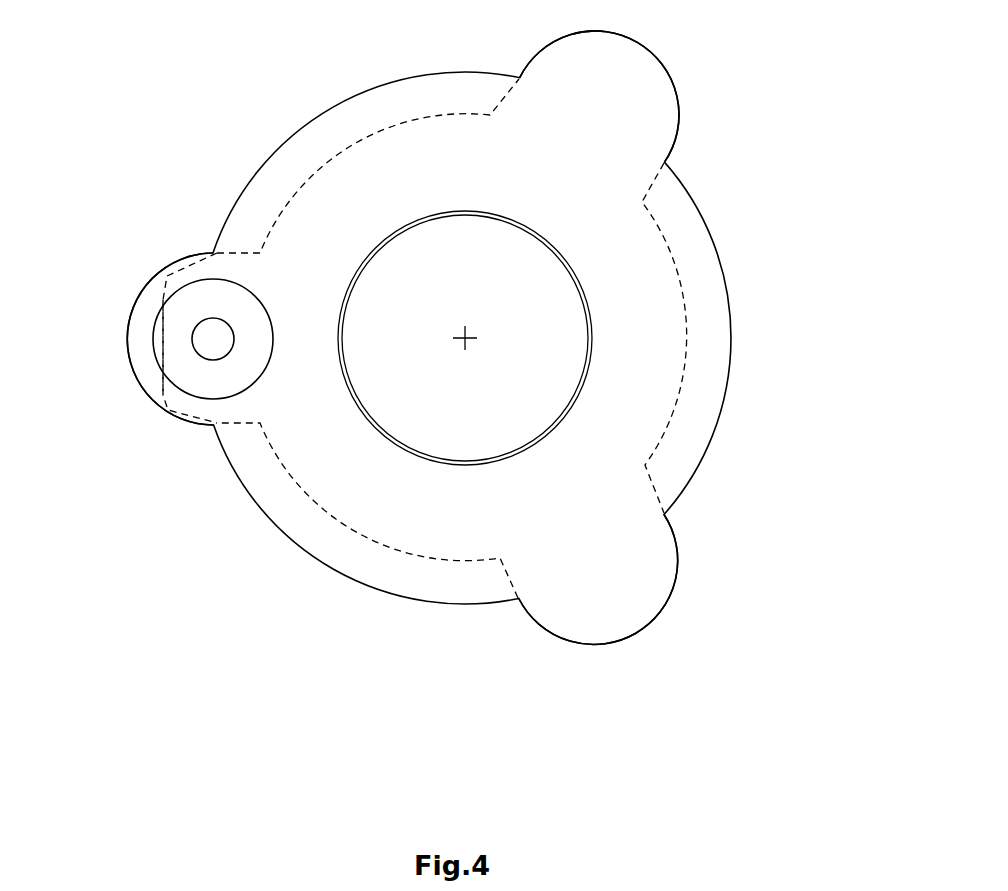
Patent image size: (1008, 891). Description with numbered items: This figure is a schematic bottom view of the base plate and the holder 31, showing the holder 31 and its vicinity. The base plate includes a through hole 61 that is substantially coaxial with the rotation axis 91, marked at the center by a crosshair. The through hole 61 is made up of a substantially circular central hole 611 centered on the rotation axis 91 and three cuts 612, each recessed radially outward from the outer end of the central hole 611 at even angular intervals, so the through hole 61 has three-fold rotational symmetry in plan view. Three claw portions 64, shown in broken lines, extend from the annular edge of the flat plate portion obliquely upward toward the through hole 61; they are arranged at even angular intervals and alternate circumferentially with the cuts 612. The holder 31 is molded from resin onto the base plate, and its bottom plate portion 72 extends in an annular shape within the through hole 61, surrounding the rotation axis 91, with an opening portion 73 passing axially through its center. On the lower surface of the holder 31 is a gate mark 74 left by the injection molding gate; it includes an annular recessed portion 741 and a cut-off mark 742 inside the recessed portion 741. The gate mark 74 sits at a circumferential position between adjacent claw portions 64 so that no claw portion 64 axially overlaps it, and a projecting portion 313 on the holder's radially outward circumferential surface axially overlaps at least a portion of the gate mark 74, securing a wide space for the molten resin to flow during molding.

The holder 31 is at (531, 433).
The projecting portion 313 is at (165, 300).
The through hole 61 is at (580, 765).
The central hole 611 is at (465, 513).
The cuts 612 is at (615, 75).
The claw portions 64 is at (333, 143).
The bottom plate portion 72 is at (618, 400).
The opening portion 73 is at (425, 398).
The gate mark 74 is at (87, 505).
The recessed portion 741 is at (177, 340).
The cut-off mark 742 is at (212, 343).
The rotation axis 91 is at (470, 332).